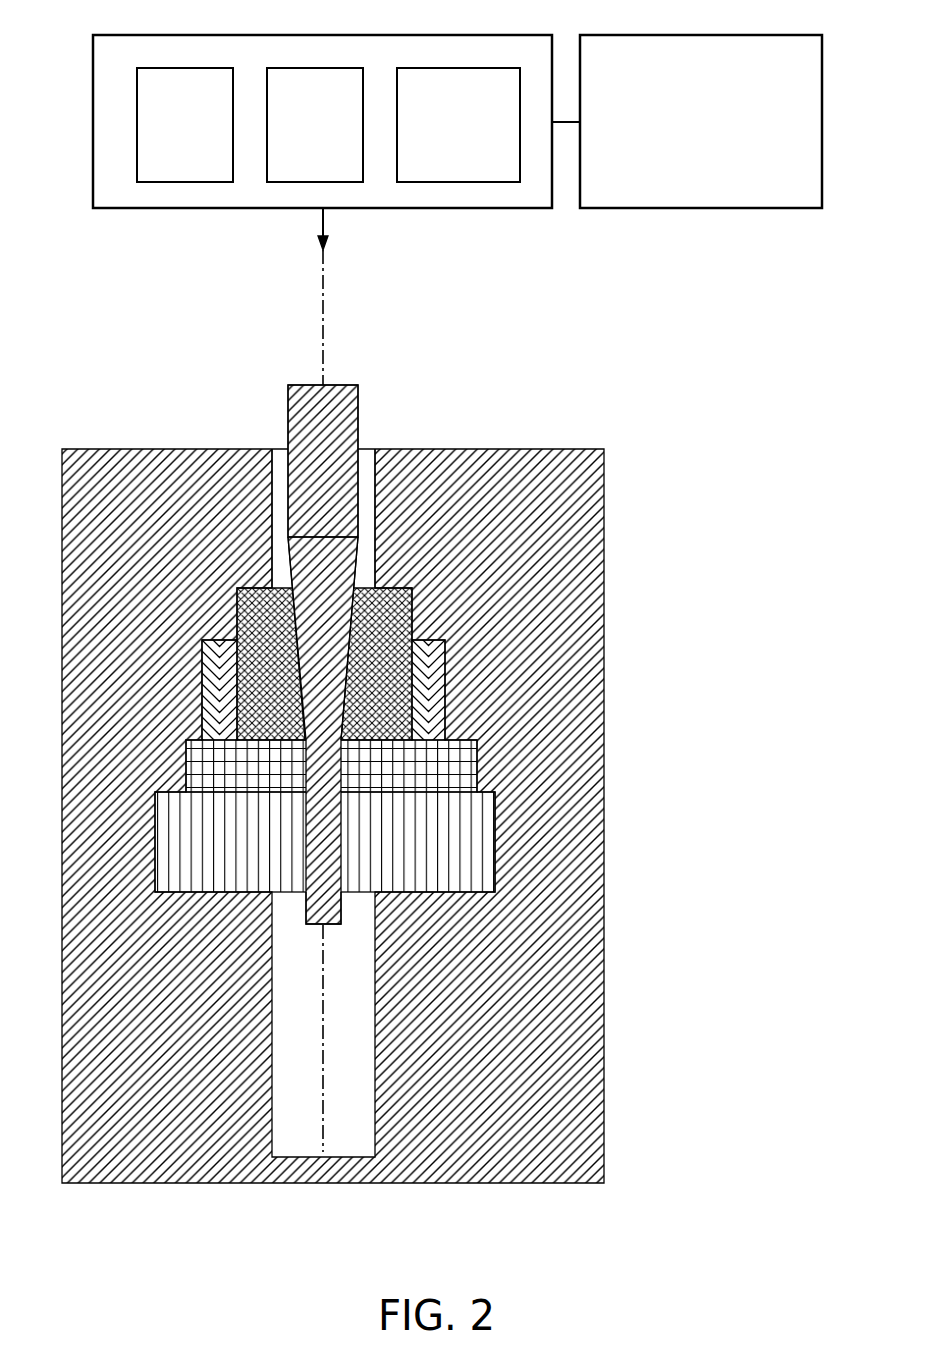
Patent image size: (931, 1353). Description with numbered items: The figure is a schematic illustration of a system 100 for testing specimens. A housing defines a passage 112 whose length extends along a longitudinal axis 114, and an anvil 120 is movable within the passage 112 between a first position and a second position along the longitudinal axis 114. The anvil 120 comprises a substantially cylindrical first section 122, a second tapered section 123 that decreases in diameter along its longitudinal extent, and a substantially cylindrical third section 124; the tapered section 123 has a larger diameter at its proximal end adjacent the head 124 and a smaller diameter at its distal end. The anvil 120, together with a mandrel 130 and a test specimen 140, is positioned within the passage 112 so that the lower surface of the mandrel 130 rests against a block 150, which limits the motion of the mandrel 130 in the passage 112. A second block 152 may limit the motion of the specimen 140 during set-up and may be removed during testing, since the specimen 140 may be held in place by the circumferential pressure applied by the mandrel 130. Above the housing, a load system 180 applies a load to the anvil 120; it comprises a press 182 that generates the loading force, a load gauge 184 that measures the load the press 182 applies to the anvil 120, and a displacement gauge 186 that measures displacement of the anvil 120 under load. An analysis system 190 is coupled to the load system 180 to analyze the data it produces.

The system 100 is at (329, 591).
The passage 112 is at (366, 463).
The longitudinal axis 114 is at (310, 283).
The anvil 120 is at (366, 371).
The first section 122 is at (315, 450).
The second tapered section 123 is at (350, 563).
The third section 124 is at (330, 912).
The mandrel 130 is at (392, 605).
The test specimen 140 is at (427, 652).
The block 150 is at (325, 842).
The second block 152 is at (331, 766).
The load system 180 is at (322, 121).
The press 182 is at (185, 125).
The load gauge 184 is at (315, 125).
The displacement gauge 186 is at (458, 125).
The analysis system 190 is at (701, 121).